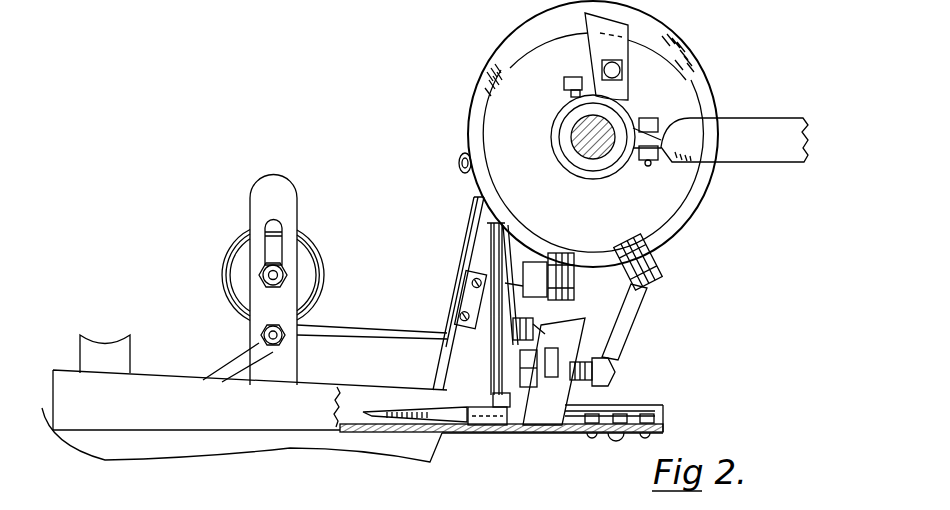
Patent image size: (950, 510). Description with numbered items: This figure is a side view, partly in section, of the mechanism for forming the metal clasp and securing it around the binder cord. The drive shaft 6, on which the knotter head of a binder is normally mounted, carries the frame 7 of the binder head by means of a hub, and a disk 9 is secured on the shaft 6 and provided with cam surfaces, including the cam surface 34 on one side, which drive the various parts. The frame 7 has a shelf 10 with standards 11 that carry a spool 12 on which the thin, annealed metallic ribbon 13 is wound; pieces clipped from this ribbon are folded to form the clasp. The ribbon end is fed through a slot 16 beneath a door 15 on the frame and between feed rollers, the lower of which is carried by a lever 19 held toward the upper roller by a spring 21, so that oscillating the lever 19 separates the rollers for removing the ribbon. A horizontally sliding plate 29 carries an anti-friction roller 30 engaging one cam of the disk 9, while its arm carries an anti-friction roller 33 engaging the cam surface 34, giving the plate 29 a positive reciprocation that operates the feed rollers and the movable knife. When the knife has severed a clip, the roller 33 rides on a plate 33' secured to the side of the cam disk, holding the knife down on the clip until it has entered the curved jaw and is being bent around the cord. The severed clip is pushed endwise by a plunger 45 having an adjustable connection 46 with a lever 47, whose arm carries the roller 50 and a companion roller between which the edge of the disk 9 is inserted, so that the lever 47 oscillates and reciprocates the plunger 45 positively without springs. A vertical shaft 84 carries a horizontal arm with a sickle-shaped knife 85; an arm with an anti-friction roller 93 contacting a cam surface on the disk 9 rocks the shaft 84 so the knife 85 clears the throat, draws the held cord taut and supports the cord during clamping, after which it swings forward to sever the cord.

The disk 9 is at (678, 92).
The cam surface 34 is at (697, 213).
The drive shaft 6 is at (592, 149).
The plate 33' is at (541, 56).
The anti-friction roller 93 is at (463, 176).
The standards 11 is at (290, 202).
The spool 12 is at (308, 270).
The metallic ribbon 13 is at (325, 330).
The shelf 10 is at (272, 427).
The sickle-shaped knife 85 is at (383, 410).
The door 15 is at (472, 243).
The slot 16 is at (453, 338).
The plate 29 is at (525, 285).
The anti-friction roller 30 is at (535, 263).
The anti-friction roller 33 is at (572, 262).
The vertical shaft 84 is at (523, 343).
The spring 21 is at (495, 347).
The frame 7 is at (535, 417).
The lever 19 is at (525, 390).
The plunger 45 is at (563, 433).
The adjustable connection 46 is at (613, 368).
The lever 47 is at (634, 308).
The roller 50 is at (653, 258).